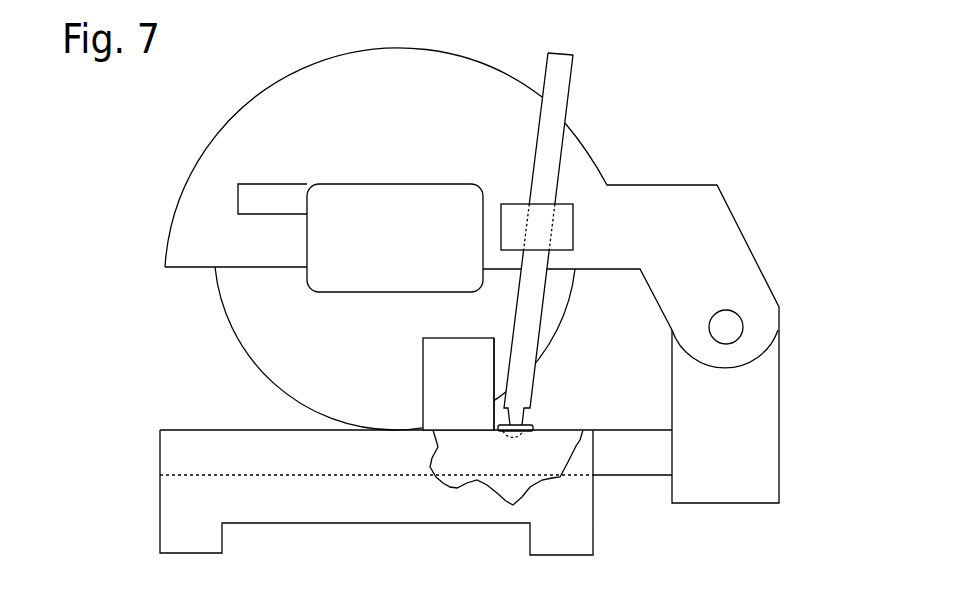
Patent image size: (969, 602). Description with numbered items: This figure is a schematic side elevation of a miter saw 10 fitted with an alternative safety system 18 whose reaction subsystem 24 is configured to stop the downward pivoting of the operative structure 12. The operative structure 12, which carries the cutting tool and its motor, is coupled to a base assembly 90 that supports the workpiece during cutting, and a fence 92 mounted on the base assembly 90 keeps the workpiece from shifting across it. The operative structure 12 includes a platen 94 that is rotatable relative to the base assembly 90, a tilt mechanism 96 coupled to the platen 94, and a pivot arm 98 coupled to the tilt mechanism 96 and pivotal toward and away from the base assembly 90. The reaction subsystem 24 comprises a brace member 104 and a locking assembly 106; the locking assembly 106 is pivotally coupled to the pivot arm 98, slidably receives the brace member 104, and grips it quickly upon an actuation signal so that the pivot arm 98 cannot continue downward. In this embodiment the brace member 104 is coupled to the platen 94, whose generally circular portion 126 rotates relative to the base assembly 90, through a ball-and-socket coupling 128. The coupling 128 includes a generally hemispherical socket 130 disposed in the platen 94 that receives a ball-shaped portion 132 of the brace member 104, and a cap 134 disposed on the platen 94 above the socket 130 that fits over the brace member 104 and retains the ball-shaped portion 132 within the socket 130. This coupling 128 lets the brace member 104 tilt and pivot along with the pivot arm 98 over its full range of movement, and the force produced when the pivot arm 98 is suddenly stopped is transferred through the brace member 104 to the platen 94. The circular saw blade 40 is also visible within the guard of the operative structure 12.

The miter saw 10 is at (460, 303).
The operative structure 12 is at (155, 138).
The safety system 18 is at (725, 148).
The reaction subsystem 24 is at (487, 162).
The circular saw blade 40 is at (265, 360).
The base assembly 90 is at (140, 523).
The fence 92 is at (418, 431).
The platen 94 is at (615, 463).
The tilt mechanism 96 is at (767, 393).
The pivot arm 98 is at (768, 312).
The brace member 104 is at (550, 127).
The locking assembly 106 is at (560, 225).
The circular portion 126 is at (440, 475).
The ball-and-socket coupling 128 is at (575, 363).
The hemispherical socket 130 is at (512, 437).
The ball-shaped portion 132 is at (507, 420).
The cap 134 is at (528, 427).